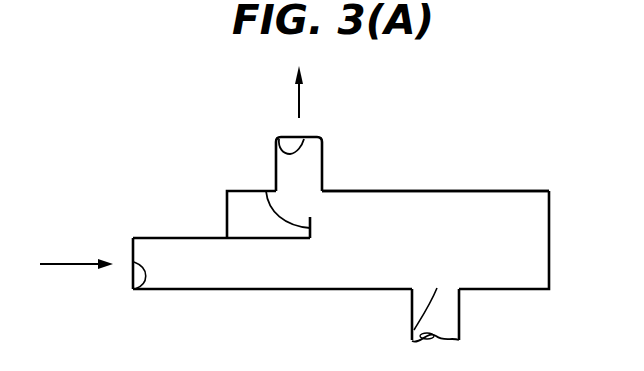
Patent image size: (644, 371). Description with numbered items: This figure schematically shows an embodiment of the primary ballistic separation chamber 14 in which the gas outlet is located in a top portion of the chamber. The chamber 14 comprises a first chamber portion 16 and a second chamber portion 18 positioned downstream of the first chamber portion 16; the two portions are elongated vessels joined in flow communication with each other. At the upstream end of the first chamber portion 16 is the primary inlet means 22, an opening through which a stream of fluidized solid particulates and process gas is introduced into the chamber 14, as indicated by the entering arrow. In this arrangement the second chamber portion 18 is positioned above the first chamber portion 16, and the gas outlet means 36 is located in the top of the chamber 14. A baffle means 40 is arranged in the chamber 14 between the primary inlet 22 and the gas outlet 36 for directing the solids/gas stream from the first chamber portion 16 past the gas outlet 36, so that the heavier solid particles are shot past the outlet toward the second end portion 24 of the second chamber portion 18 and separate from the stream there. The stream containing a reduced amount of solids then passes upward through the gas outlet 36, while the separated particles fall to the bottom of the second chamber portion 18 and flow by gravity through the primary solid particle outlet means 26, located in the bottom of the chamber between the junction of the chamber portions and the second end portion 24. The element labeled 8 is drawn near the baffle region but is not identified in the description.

The baffle wall 8 is at (266, 191).
The primary ballistic separation chamber 14 is at (473, 191).
The first chamber portion 16 is at (253, 294).
The second chamber portion 18 is at (408, 237).
The primary inlet means 22 is at (134, 262).
The second end portion 24 is at (549, 221).
The primary solid particle outlet means 26 is at (410, 322).
The gas outlet means 36 is at (292, 143).
The baffle means 40 is at (313, 207).